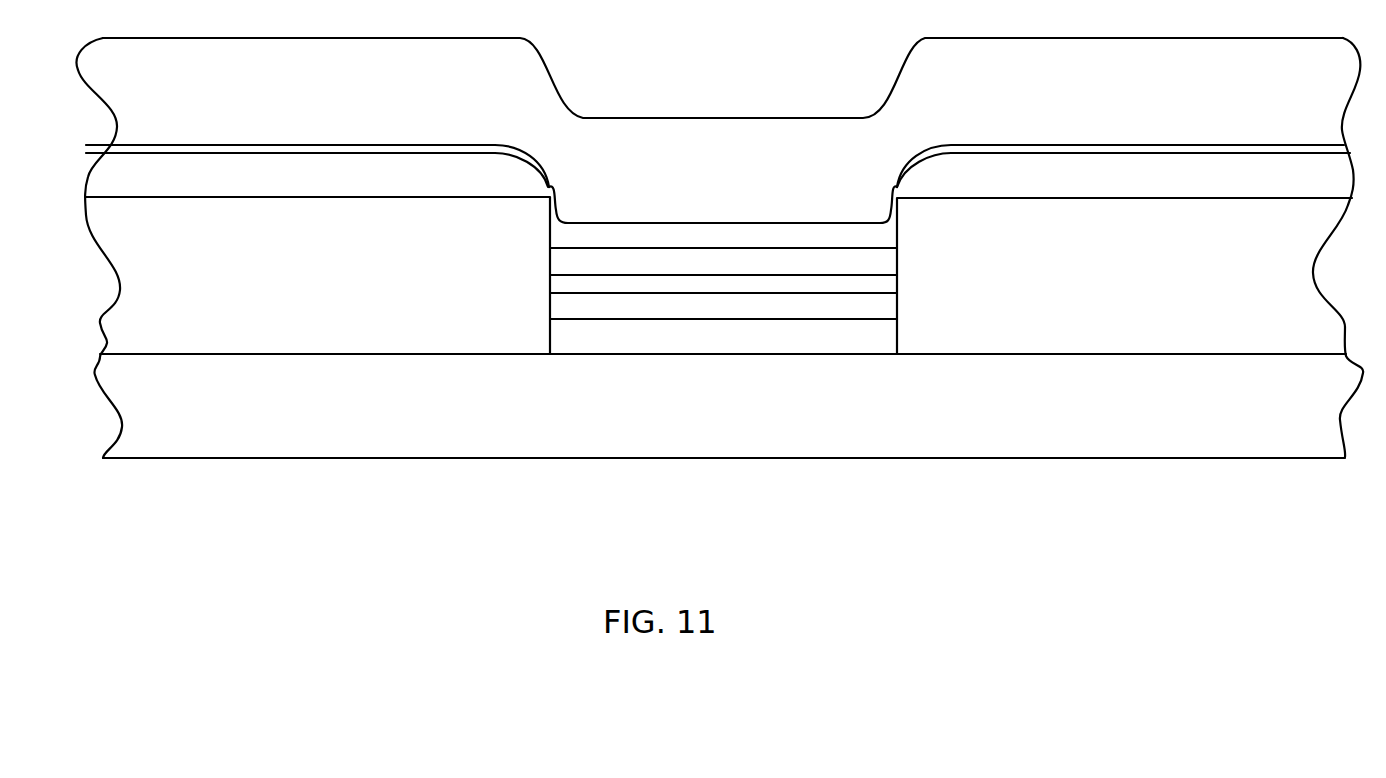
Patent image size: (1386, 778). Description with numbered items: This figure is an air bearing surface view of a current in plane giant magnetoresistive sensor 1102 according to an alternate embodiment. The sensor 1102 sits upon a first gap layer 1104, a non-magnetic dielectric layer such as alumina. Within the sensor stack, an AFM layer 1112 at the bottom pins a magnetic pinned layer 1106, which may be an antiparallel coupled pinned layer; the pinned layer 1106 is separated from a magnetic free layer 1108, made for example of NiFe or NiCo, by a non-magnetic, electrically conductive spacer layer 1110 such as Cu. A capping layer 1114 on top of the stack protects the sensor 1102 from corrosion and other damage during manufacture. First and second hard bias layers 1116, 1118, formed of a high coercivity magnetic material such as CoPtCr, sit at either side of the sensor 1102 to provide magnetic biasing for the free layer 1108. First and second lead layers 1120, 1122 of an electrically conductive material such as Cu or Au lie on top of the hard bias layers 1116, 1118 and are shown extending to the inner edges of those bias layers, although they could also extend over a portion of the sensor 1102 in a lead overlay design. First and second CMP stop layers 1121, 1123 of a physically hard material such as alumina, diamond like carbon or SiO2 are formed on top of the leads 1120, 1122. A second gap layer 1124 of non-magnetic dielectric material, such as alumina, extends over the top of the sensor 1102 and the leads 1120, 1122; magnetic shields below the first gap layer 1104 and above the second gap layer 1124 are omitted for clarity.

The current in plane GMR sensor 1102 is at (813, 208).
The first gap layer 1104 is at (759, 397).
The magnetic pinned layer 1106 is at (782, 305).
The magnetic free layer 1108 is at (779, 263).
The spacer layer 1110 is at (878, 287).
The AFM layer 1112 is at (782, 335).
The capping layer 1114 is at (782, 235).
The first hard bias layer 1116 is at (1174, 280).
The second hard bias layer 1118 is at (364, 260).
The first lead layer 1120 is at (1174, 177).
The first CMP stop layer 1121 is at (378, 148).
The second lead layer 1122 is at (364, 172).
The second CMP stop layer 1123 is at (1207, 148).
The second gap layer 1124 is at (835, 145).